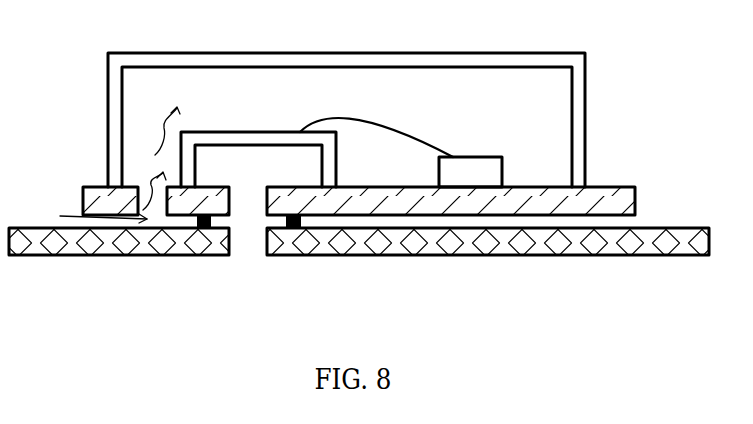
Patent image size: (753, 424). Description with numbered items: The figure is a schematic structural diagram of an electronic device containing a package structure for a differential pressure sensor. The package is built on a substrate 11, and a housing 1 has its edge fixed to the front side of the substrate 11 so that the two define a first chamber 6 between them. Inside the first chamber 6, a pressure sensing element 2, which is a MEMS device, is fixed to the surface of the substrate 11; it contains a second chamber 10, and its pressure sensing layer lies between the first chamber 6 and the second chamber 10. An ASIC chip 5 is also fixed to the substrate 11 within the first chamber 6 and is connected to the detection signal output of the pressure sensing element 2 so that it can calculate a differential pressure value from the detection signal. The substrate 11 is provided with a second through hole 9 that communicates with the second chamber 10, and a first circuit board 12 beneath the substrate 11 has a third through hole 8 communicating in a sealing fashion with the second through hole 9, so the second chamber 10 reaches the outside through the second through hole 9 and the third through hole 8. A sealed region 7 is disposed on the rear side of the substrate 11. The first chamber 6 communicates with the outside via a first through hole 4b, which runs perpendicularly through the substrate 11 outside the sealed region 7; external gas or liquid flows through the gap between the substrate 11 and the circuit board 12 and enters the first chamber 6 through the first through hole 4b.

The housing 1 is at (447, 57).
The pressure sensing element 2 is at (228, 135).
The first through hole 4b is at (147, 188).
The ASIC chip 5 is at (466, 182).
The first chamber 6 is at (148, 106).
The sealed region 7 is at (205, 228).
The third through hole 8 is at (245, 250).
The second through hole 9 is at (252, 205).
The second chamber 10 is at (296, 172).
The substrate 11 is at (450, 205).
The first circuit board 12 is at (552, 240).